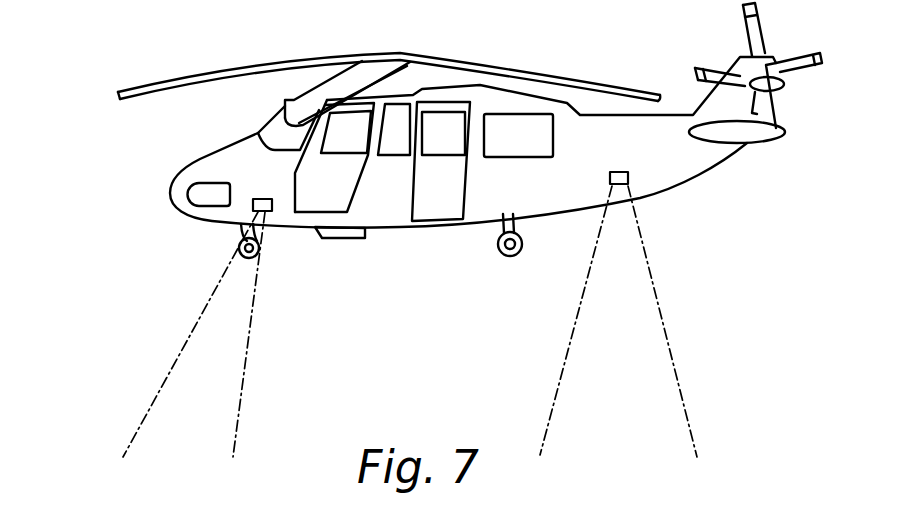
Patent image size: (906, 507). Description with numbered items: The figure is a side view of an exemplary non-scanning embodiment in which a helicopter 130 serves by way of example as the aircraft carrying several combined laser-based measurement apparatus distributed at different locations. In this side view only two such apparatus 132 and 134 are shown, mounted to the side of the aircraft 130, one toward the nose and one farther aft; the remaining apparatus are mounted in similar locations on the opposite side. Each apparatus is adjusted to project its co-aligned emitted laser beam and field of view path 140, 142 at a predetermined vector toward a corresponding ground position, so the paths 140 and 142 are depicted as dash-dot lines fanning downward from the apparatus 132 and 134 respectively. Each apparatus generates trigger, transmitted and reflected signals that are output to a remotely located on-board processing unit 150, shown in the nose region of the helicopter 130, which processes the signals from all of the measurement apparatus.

The helicopter 130 is at (163, 172).
The combined laser-based measurement apparatus 132 is at (273, 204).
The combined laser-based measurement apparatus 134 is at (628, 175).
The co-aligned emitted laser beam and field of view path 140 is at (185, 420).
The co-aligned emitted laser beam and field of view path 142 is at (623, 412).
The on-board processing unit 150 is at (208, 192).